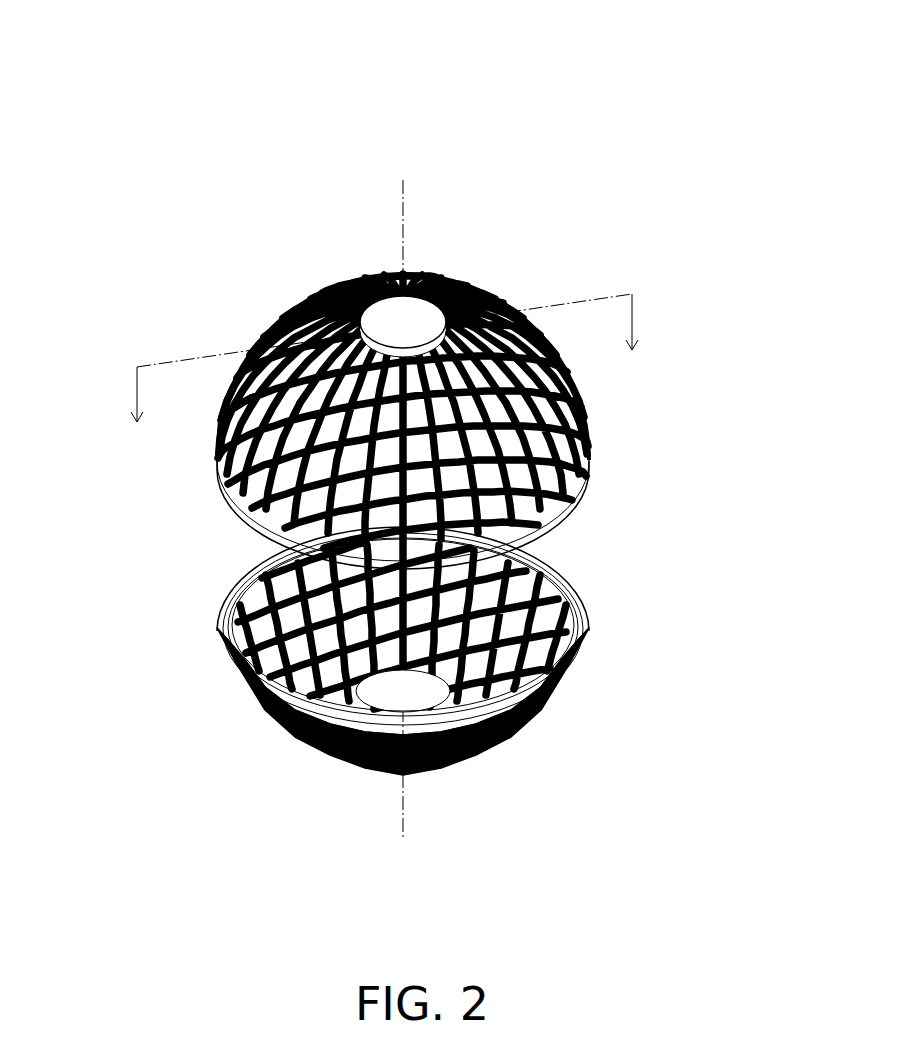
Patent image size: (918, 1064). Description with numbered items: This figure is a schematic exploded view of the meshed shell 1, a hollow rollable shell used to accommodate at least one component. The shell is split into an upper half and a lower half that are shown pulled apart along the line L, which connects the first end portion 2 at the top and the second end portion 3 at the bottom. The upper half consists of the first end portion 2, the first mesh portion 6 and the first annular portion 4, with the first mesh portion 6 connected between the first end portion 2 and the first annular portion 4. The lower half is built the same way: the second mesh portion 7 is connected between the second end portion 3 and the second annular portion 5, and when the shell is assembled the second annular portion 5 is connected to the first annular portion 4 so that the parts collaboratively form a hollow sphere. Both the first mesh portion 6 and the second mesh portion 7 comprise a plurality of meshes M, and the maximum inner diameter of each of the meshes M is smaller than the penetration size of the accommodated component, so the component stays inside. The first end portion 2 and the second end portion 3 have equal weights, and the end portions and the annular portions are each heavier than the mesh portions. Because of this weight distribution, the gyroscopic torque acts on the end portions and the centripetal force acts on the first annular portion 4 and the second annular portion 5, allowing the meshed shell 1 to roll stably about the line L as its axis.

The meshed shell 1 is at (777, 68).
The first end portion 2 is at (426, 308).
The second end portion 3 is at (221, 634).
The first annular portion 4 is at (572, 497).
The second annular portion 5 is at (553, 672).
The first mesh portion 6 is at (585, 420).
The second mesh portion 7 is at (511, 742).
The line L is at (403, 490).
The meshes M is at (270, 447).